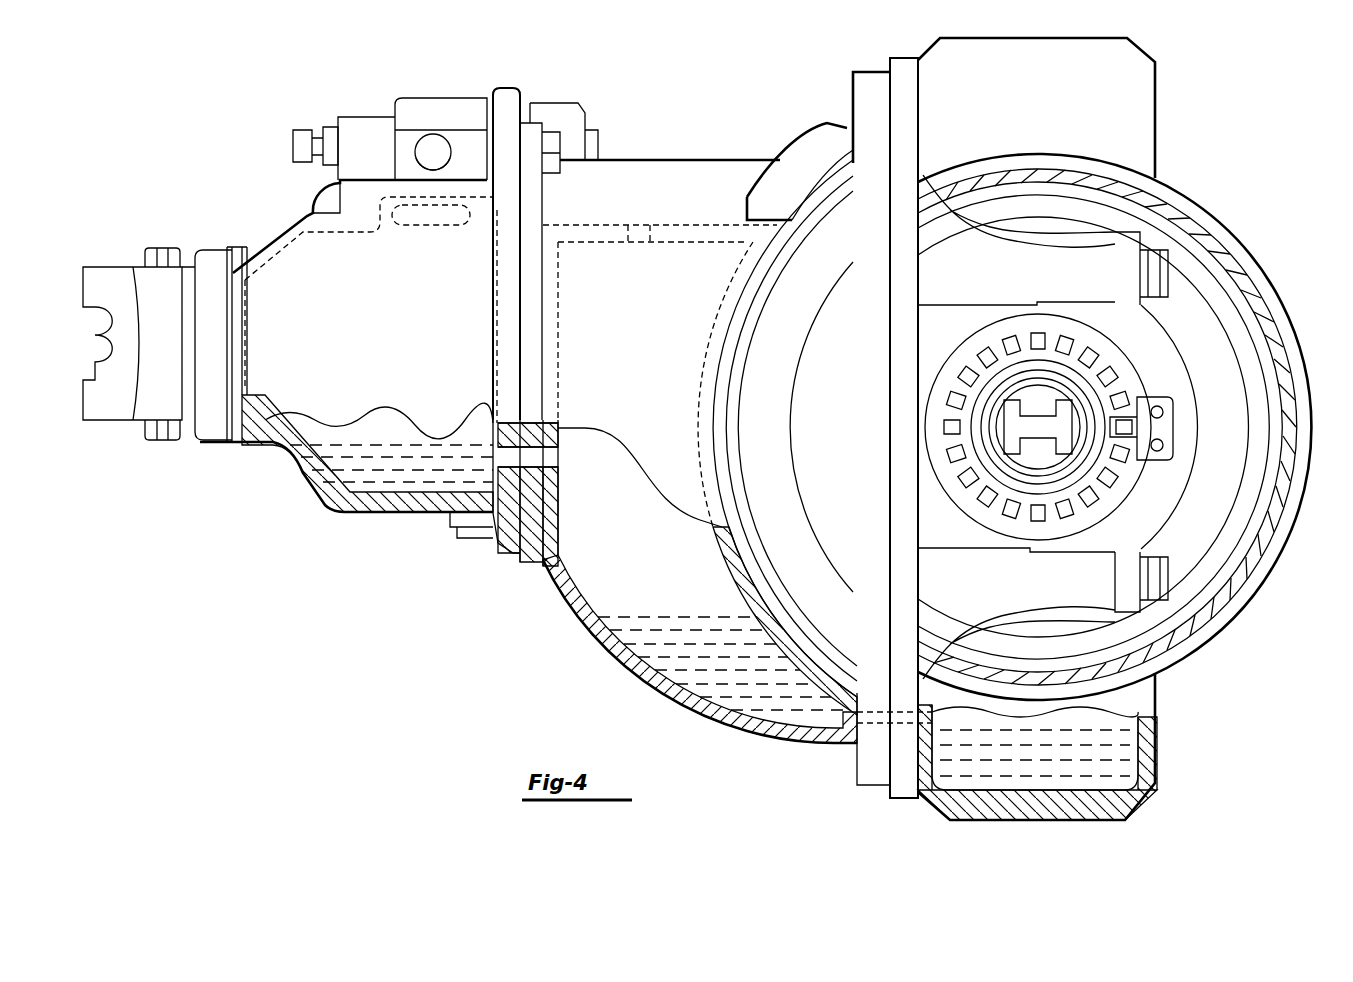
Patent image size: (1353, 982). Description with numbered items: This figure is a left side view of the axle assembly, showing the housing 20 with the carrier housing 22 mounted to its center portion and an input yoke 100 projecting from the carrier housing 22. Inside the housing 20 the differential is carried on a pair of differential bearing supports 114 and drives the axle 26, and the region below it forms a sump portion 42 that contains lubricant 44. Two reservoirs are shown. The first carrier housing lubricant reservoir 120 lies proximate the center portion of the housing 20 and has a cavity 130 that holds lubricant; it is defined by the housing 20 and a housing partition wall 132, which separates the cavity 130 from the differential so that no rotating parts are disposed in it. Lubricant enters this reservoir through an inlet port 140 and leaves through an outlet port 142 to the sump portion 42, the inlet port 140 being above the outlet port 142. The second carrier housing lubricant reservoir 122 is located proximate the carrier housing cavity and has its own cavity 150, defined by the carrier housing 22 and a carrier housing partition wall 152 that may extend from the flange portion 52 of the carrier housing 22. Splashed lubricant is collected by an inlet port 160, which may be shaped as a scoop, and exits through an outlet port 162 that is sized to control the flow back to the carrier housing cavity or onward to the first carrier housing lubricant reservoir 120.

The housing 20 is at (995, 822).
The carrier housing 22 is at (305, 482).
The axle 26 is at (1030, 385).
The sump portion 42 is at (1158, 750).
The lubricant 44 is at (402, 474).
The flange portion 52 is at (858, 88).
The input yoke 100 is at (112, 278).
The differential bearing support 114 is at (1008, 222).
The first carrier housing lubricant reservoir 120 is at (638, 570).
The second carrier housing lubricant reservoir 122 is at (355, 366).
The cavity 130 is at (660, 403).
The housing partition wall 132 is at (722, 570).
The inlet port 140 is at (640, 235).
The outlet port 142 is at (885, 718).
The cavity 150 is at (418, 323).
The carrier housing partition wall 152 is at (292, 246).
The inlet port 160 is at (423, 222).
The outlet port 162 is at (552, 455).